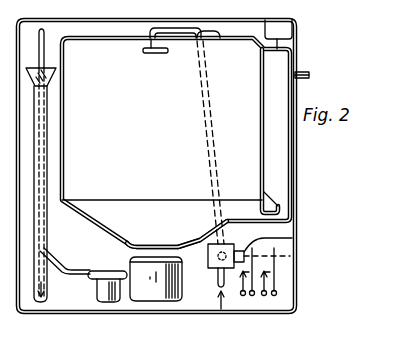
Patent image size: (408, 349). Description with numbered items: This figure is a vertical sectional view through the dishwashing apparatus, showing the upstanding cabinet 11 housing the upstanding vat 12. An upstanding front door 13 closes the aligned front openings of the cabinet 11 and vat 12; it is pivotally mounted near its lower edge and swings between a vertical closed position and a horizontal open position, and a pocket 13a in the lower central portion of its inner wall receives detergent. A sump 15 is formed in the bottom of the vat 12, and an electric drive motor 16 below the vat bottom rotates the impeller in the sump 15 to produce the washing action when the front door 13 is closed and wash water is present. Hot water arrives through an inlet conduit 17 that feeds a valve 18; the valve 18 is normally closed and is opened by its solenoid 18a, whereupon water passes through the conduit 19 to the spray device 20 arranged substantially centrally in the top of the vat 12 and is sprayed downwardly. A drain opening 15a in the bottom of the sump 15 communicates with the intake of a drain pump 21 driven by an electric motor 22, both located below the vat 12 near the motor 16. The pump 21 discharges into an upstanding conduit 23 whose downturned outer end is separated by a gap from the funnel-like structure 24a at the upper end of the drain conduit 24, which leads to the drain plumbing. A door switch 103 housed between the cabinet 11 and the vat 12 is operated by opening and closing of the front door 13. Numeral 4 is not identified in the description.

The feed conduit 4 is at (36, 275).
The cabinet 11 is at (18, 178).
The vat 12 is at (63, 131).
The front door 13 is at (294, 165).
The pocket 13a is at (258, 205).
The sump 15 is at (124, 200).
The drain opening 15a is at (140, 247).
The electric drive motor 16 is at (163, 293).
The inlet conduit 17 is at (225, 283).
The valve 18 is at (210, 258).
The solenoid 18a is at (286, 239).
The conduit 19 is at (208, 38).
The spray device 20 is at (150, 55).
The drain pump 21 is at (90, 268).
The electric motor 22 is at (96, 292).
The conduit 23 is at (44, 46).
The drain conduit 24 is at (40, 194).
The funnel-like structure 24a is at (52, 80).
The door switch 103 is at (283, 31).